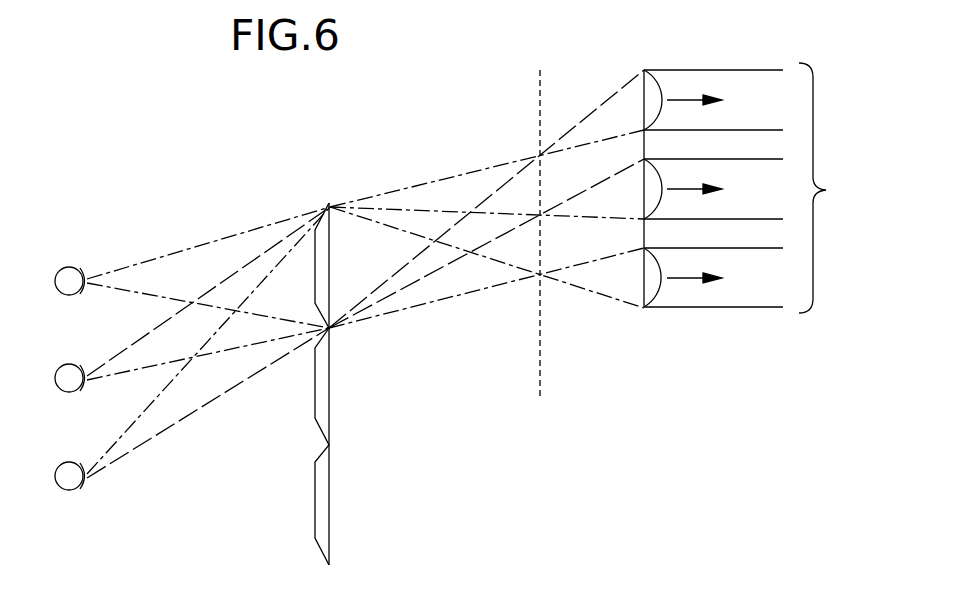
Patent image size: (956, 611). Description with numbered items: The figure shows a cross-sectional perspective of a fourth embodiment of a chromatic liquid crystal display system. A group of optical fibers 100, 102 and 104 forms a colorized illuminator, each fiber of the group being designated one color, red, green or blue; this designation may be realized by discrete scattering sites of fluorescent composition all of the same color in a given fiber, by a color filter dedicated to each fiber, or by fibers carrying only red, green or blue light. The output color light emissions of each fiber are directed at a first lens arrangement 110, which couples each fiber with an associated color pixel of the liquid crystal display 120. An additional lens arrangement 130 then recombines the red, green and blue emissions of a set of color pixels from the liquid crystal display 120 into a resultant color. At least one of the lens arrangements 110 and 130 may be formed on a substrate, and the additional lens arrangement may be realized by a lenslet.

The optical fiber 100 is at (68, 266).
The optical fiber 102 is at (68, 364).
The optical fiber 104 is at (68, 462).
The first lens arrangement 110 is at (329, 203).
The liquid crystal display 120 is at (542, 82).
The additional lens arrangement 130 is at (644, 70).